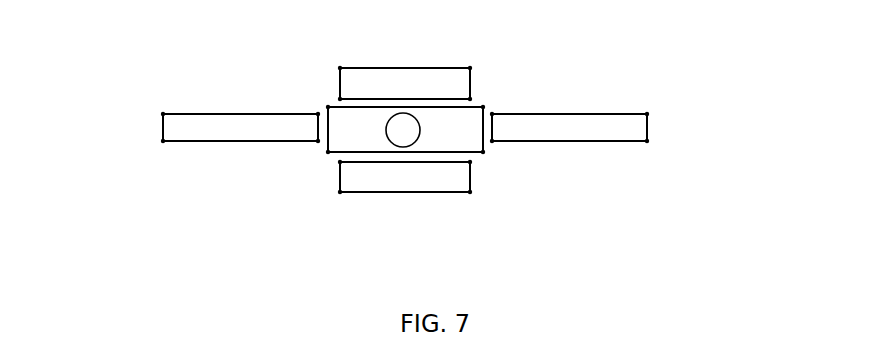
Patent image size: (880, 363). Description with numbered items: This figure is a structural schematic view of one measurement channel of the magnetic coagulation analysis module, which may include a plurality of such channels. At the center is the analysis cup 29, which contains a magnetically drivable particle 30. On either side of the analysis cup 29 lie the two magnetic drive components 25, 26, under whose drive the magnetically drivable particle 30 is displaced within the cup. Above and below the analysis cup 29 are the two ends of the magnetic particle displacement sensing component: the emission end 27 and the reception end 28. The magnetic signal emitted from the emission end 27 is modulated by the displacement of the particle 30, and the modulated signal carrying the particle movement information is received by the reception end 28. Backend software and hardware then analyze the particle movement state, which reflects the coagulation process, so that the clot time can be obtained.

The magnetic drive component 25 is at (161, 143).
The magnetic drive component 26 is at (650, 143).
The emission end of the magnetic particle displacement sensing component 27 is at (338, 194).
The reception end of the magnetic particle displacement sensing component 28 is at (338, 66).
The analysis cup 29 is at (486, 154).
The magnetically drivable particle 30 is at (423, 135).